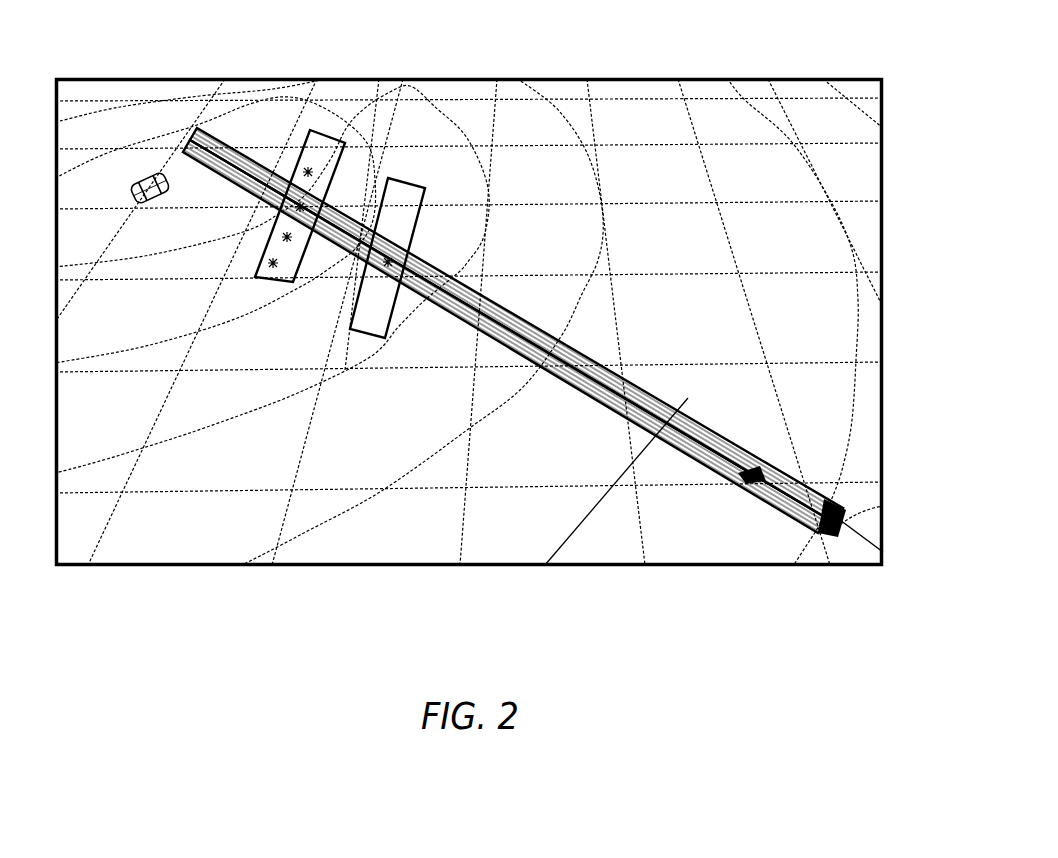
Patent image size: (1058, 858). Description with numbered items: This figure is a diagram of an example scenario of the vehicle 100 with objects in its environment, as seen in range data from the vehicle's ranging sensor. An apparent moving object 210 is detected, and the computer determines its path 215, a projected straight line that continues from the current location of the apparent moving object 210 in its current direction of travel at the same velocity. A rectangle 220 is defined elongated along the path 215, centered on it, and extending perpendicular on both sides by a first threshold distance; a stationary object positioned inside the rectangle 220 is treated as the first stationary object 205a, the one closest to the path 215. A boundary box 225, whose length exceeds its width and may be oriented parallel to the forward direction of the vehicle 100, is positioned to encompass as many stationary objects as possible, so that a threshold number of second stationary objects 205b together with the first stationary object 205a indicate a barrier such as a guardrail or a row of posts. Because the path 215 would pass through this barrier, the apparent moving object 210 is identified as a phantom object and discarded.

The vehicle 100 is at (147, 172).
The first stationary object 205a is at (372, 118).
The second stationary objects 205b is at (307, 168).
The apparent moving object 210 is at (848, 513).
The path 215 is at (600, 402).
The rectangle 220 is at (584, 354).
The boundary box 225 is at (272, 290).